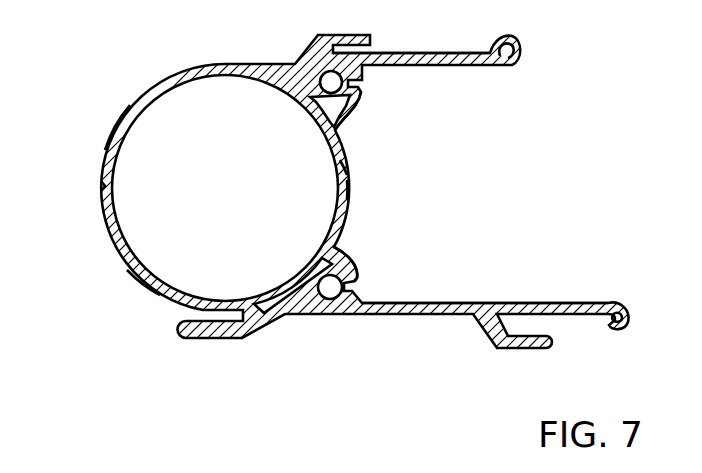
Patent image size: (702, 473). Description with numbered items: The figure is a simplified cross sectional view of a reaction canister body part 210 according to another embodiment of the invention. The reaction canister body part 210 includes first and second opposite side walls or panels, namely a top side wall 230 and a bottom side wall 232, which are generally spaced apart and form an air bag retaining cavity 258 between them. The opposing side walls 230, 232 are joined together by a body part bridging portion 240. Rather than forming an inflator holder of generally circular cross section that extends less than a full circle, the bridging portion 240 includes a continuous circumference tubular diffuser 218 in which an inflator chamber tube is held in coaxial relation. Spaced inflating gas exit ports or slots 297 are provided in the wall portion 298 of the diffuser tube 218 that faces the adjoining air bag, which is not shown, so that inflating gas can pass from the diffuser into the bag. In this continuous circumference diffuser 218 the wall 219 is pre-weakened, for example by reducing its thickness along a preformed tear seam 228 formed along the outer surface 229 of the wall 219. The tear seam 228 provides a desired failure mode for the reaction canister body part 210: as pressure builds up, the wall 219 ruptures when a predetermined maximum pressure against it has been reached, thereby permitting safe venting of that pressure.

The reaction canister body part 210 is at (530, 167).
The continuous circumference tubular diffuser 218 is at (347, 165).
The wall 219 is at (102, 152).
The preformed tear seam 228 is at (98, 186).
The outer surface 229 is at (127, 270).
The top side wall 230 is at (433, 53).
The bottom side wall 232 is at (402, 310).
The body part bridging portion 240 is at (152, 88).
The air bag retaining cavity 258 is at (484, 188).
The inflating gas exit ports 297 is at (342, 134).
The wall portion 298 is at (347, 193).